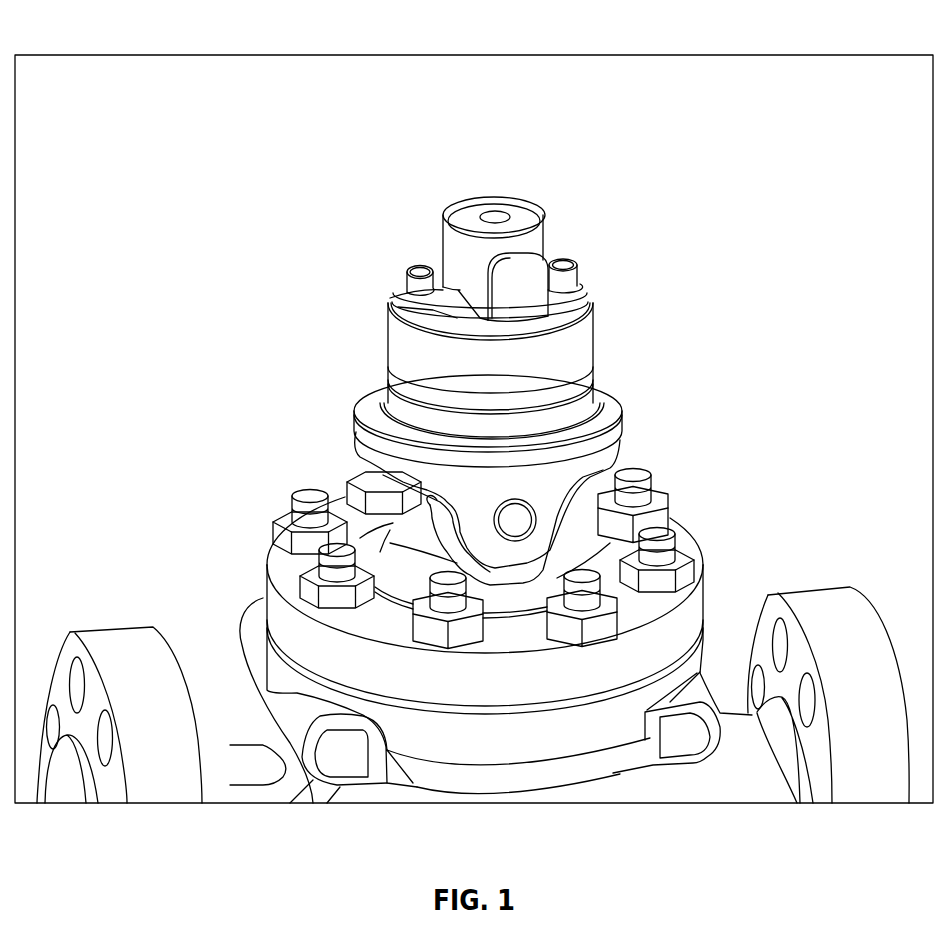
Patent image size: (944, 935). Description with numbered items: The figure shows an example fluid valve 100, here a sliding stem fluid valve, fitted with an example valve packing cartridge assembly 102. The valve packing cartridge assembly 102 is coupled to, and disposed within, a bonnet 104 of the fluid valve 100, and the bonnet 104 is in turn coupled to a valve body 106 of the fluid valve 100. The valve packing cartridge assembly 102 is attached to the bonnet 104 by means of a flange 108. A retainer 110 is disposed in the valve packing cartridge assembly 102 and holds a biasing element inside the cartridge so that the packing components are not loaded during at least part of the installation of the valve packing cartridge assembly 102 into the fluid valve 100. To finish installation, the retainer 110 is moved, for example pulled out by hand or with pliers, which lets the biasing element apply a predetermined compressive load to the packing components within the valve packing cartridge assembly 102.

The fluid valve 100 is at (287, 42).
The valve packing cartridge assembly 102 is at (463, 180).
The bonnet 104 is at (354, 396).
The valve body 106 is at (240, 618).
The flange 108 is at (392, 292).
The retainer 110 is at (551, 263).